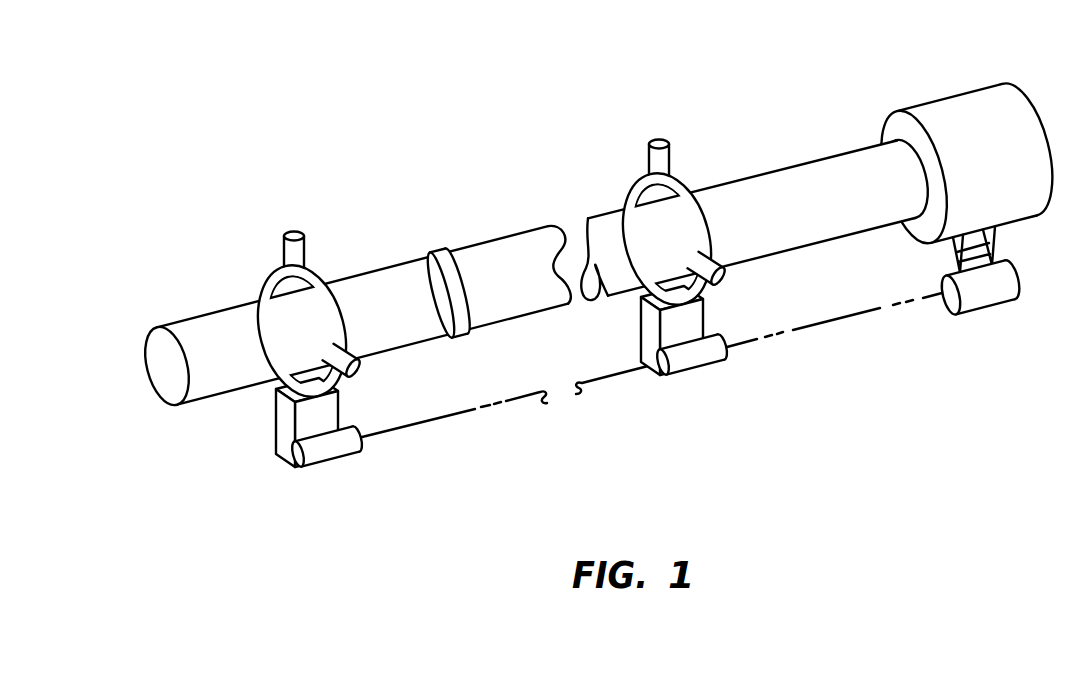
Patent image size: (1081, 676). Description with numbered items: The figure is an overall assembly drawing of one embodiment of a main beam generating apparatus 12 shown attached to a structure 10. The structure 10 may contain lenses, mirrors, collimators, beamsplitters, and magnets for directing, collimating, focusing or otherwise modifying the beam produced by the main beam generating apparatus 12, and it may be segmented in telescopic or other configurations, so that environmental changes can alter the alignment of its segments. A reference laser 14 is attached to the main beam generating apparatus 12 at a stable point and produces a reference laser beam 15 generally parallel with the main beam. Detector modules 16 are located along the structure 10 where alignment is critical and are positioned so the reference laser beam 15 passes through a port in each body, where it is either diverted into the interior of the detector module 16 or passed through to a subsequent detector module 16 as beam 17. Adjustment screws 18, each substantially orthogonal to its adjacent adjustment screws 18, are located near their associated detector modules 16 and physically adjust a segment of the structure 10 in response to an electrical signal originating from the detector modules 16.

The structure 10 is at (750, 176).
The main beam generating apparatus 12 is at (968, 92).
The reference laser 14 is at (996, 293).
The reference laser beam 15 is at (827, 327).
The detector module 16 is at (283, 418).
The beam 17 is at (450, 417).
The adjustment screw 18 is at (357, 356).